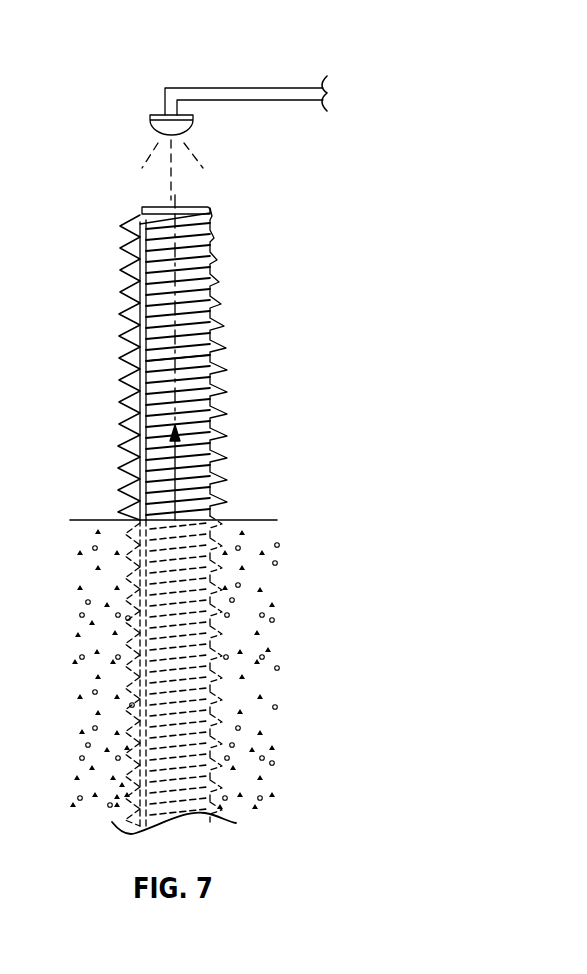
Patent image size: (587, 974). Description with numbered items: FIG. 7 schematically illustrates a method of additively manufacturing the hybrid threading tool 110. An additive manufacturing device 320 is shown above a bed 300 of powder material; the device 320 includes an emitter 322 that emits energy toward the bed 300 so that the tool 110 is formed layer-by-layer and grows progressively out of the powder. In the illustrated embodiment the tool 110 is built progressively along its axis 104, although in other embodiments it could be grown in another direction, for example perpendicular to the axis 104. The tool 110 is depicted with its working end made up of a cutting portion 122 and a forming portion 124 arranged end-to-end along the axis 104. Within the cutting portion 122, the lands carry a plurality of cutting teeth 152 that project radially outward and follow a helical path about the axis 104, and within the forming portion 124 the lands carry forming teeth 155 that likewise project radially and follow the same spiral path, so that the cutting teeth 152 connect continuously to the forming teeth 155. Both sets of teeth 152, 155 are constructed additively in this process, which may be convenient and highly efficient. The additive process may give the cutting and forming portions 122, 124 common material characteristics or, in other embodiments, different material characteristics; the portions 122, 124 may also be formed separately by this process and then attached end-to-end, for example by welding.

The additive manufacturing device 320 is at (223, 105).
The emitter 322 is at (157, 126).
The tool 110 is at (189, 443).
The axis 104 is at (190, 250).
The cutting teeth 152 is at (213, 255).
The cutting portion 122 is at (205, 294).
The forming teeth 155 is at (203, 367).
The forming portion 124 is at (207, 426).
The bed 300 is at (105, 599).